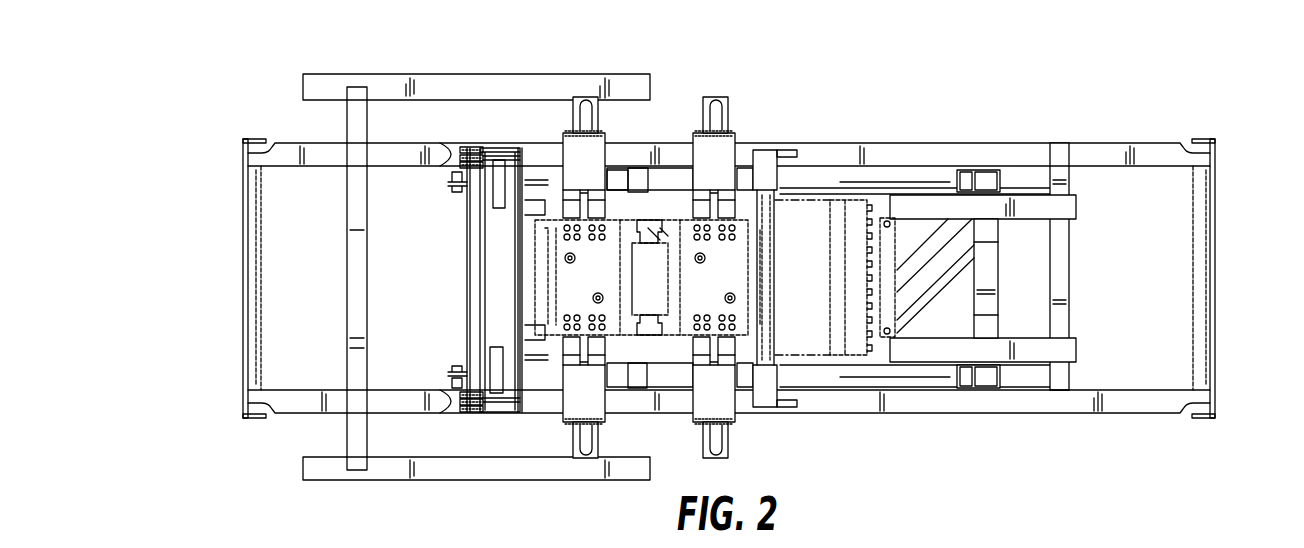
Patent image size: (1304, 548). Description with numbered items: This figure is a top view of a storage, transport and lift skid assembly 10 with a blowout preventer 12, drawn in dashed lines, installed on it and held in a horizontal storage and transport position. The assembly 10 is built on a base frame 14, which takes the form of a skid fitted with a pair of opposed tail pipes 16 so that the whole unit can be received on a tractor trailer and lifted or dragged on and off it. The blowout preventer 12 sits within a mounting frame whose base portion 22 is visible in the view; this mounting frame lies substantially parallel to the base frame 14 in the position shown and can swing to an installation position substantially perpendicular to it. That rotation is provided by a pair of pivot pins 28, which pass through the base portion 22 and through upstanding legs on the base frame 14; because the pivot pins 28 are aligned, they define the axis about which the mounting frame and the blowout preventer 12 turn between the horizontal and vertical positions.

The storage, transport and lift skid assembly 10 is at (727, 268).
The blowout preventer 12 is at (810, 237).
The base frame 14 is at (1022, 403).
The tail pipes 16 is at (245, 237).
The base portion 22 is at (499, 160).
The pivot pins 28 is at (468, 146).